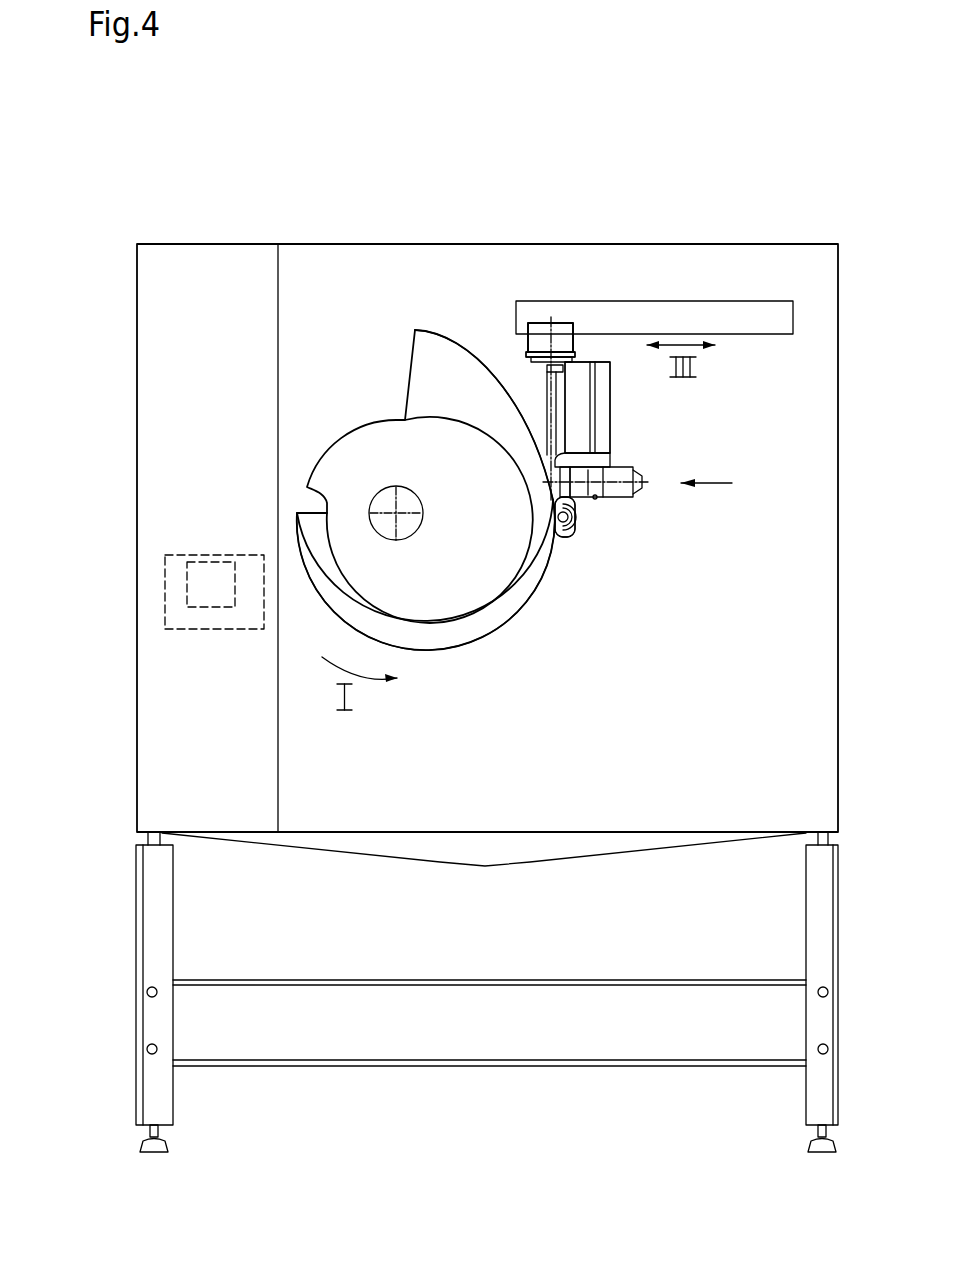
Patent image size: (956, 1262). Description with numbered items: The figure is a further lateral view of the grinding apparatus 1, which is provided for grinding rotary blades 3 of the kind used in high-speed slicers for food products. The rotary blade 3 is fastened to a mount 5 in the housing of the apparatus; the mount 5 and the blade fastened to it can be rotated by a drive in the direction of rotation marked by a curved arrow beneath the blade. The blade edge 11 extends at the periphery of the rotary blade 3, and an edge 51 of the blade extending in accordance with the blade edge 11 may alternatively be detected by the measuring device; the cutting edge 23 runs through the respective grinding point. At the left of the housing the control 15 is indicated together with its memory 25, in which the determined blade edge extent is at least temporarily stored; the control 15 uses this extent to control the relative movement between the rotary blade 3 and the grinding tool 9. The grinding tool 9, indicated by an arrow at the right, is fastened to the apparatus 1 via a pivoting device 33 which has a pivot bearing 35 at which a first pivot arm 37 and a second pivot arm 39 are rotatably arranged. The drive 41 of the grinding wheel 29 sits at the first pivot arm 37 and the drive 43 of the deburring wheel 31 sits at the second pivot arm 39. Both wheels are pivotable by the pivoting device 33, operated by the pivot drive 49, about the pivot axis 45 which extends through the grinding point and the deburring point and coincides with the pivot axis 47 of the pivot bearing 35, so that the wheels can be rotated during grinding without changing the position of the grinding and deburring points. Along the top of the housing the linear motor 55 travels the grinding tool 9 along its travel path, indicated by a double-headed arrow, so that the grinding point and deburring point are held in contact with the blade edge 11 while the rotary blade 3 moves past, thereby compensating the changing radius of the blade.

The grinding apparatus 1 is at (125, 185).
The rotary blade 3 is at (452, 657).
The mount 5 is at (405, 507).
The grinding tool 9 is at (718, 483).
The blade edge 11 is at (472, 620).
The control 15 is at (177, 554).
The cutting edge 23 is at (408, 648).
The memory 25 is at (187, 593).
The grinding wheel 29 is at (575, 453).
The deburring wheel 31 is at (575, 520).
The pivoting device 33 is at (518, 342).
The pivot bearing 35 is at (562, 347).
The pivot arm 37 is at (612, 406).
The pivot arm 39 is at (547, 402).
The drive of the grinding wheel 41 is at (630, 497).
The drive of the deburring wheel 43 is at (567, 537).
The pivot axis 45 is at (551, 317).
The pivot axis of the pivot bearing 47 is at (551, 317).
The pivot drive 49 is at (567, 347).
The edge 51 is at (498, 590).
The linear motor 55 is at (695, 302).